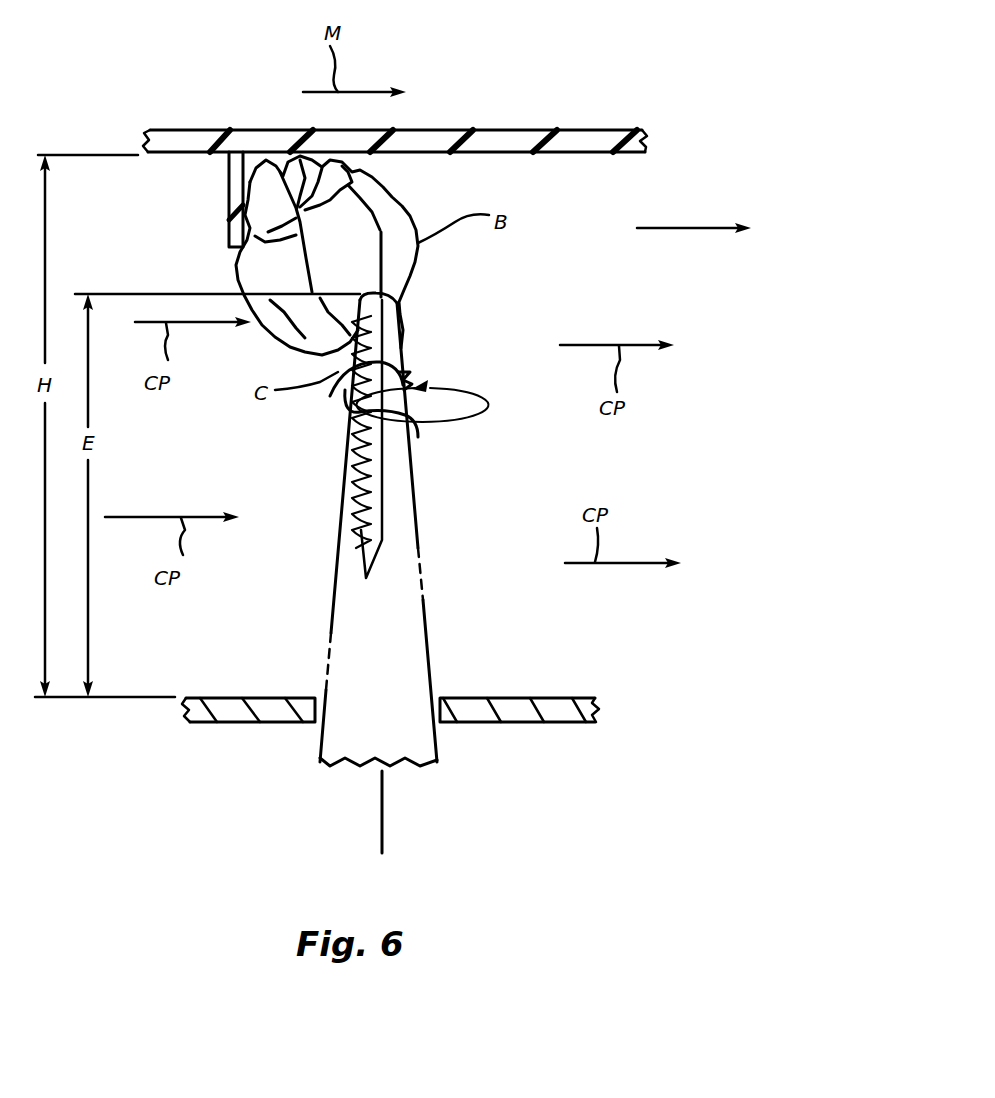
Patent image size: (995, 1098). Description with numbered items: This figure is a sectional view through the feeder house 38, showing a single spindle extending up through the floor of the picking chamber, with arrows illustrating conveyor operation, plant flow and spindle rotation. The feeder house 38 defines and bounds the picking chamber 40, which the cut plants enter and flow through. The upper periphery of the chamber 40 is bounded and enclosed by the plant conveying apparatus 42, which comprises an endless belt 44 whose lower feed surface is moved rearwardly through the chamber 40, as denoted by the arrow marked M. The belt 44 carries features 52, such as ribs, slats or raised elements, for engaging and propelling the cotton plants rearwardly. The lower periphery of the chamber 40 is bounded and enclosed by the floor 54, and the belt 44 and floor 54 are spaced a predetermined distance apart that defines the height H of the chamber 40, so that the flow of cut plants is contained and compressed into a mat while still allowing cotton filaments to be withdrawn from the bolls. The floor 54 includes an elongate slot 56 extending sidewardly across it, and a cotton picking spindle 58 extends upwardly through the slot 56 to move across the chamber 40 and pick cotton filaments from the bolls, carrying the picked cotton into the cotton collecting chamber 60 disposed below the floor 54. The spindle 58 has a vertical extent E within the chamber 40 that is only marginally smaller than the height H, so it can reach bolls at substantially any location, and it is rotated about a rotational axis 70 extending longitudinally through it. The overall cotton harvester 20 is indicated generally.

The fluid treatment apparatus 20 is at (445, 372).
The feeder house 38 is at (711, 90).
The plant conveying apparatus 42 is at (395, 104).
The endless belt 44 is at (530, 129).
The features 52 is at (229, 206).
The floor 54 is at (222, 697).
The picking chamber 40 is at (596, 673).
The elongate slots 56 is at (435, 707).
The cotton picking spindles 58 is at (418, 528).
The cotton collecting chamber 60 is at (560, 781).
The rotational axis 70 is at (385, 823).